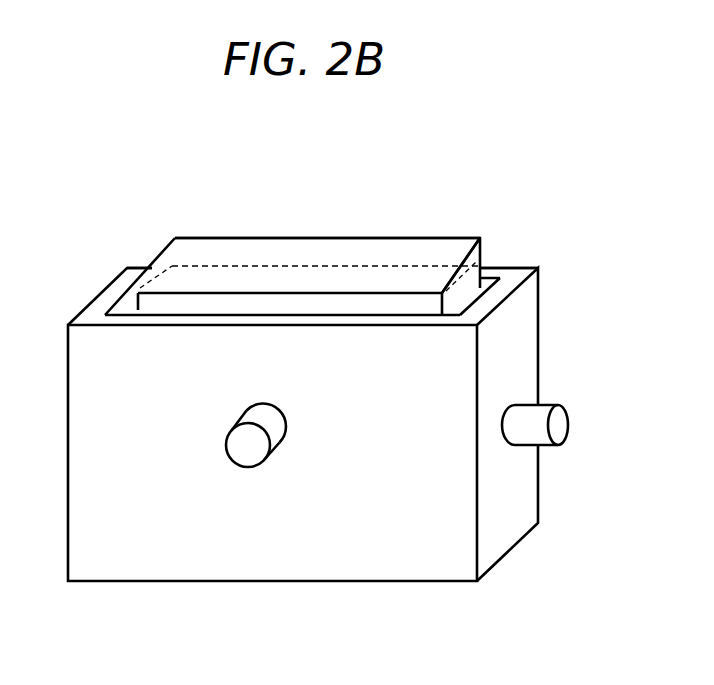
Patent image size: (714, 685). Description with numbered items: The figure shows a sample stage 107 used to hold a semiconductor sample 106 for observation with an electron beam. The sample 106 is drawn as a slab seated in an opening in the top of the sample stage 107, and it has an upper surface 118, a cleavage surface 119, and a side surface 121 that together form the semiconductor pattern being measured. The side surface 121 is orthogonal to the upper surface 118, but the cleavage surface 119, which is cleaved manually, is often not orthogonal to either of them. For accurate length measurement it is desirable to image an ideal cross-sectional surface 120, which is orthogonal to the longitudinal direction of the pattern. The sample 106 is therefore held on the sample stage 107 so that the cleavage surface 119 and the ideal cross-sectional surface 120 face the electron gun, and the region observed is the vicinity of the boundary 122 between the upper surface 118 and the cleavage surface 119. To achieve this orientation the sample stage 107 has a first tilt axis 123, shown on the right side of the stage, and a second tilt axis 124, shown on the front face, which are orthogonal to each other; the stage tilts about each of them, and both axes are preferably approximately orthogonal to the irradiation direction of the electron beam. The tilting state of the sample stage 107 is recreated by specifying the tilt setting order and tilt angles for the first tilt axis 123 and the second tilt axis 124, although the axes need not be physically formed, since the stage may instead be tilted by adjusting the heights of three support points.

The sample 106 is at (257, 252).
The sample stage 107 is at (365, 535).
The upper surface 118 is at (143, 308).
The cleavage surface 119 is at (293, 252).
The ideal cross-sectional surface 120 is at (418, 272).
The side surface 121 is at (500, 276).
The boundary 122 is at (213, 292).
The first tilt axis 123 is at (560, 443).
The second tilt axis 124 is at (230, 458).